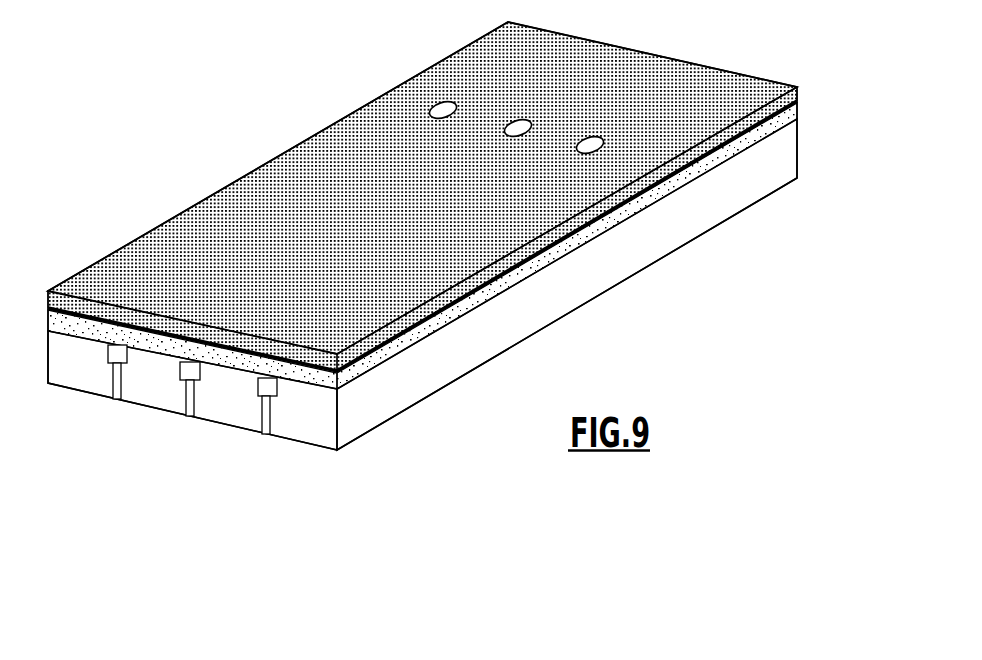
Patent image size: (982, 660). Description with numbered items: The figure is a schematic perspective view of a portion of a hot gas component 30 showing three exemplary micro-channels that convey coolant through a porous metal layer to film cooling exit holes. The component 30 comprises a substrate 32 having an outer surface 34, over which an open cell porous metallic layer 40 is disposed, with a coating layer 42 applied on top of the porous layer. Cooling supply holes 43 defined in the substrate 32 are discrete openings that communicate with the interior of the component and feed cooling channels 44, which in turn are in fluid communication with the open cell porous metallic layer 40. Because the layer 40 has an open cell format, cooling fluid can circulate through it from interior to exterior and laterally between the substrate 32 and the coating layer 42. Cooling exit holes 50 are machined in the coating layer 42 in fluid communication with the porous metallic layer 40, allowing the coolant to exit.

The hot gas component 30 is at (92, 138).
The substrate 32 is at (720, 200).
The outer surface 34 is at (797, 117).
The open cell porous metallic layer 40 is at (763, 133).
The coating layer 42 is at (740, 130).
The cooling supply holes 43 is at (268, 418).
The cooling channels 44 is at (262, 380).
The cooling exit holes 50 is at (590, 143).